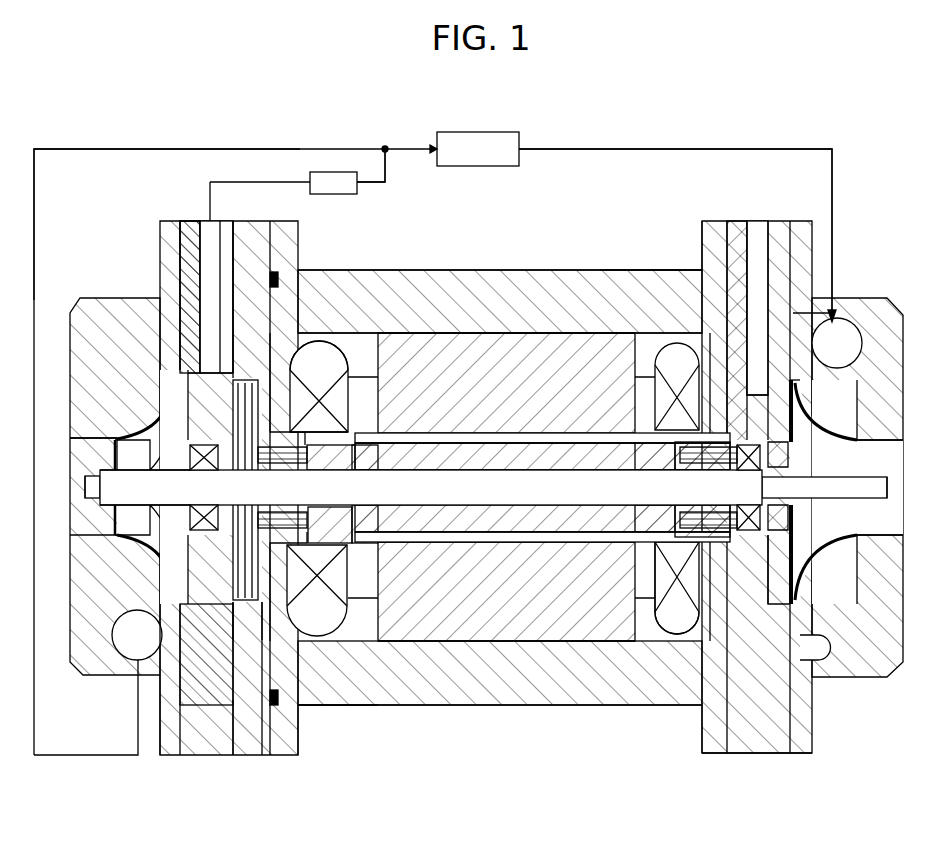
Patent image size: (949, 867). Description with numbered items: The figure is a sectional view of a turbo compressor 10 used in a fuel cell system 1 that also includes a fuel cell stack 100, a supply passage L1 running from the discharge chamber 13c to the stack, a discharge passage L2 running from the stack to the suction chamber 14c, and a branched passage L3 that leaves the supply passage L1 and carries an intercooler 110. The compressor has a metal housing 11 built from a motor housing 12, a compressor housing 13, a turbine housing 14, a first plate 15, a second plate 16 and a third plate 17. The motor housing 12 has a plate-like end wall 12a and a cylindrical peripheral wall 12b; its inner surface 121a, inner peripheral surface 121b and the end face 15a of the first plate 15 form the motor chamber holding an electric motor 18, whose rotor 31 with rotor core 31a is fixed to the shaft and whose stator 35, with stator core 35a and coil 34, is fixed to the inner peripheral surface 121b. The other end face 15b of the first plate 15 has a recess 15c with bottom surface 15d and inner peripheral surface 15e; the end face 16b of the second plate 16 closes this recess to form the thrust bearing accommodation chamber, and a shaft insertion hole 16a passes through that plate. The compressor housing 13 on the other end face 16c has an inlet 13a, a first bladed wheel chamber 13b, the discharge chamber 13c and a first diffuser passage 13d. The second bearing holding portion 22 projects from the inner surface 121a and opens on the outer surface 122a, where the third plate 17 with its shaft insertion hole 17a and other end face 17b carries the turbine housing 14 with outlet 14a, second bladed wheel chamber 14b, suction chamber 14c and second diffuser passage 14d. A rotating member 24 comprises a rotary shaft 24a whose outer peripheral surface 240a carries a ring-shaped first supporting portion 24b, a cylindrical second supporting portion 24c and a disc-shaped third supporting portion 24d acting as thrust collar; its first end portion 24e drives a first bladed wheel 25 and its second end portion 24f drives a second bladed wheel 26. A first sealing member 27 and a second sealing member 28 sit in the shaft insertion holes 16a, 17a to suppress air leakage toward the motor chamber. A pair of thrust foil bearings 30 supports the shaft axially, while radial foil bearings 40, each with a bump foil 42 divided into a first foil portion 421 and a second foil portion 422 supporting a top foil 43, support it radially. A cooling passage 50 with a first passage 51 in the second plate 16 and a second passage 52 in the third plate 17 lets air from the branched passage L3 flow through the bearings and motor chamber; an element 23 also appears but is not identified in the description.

The fuel cell system 1 is at (852, 182).
The turbo compressor 10 is at (590, 258).
The housing 11 is at (510, 262).
The motor housing 12 is at (450, 270).
The end wall 12a is at (705, 221).
The peripheral wall 12b is at (630, 270).
The compressor housing 13 is at (110, 298).
The inlet 13a is at (80, 442).
The first bladed wheel chamber 13b is at (146, 445).
The discharge chamber 13c is at (137, 635).
The first diffuser passage 13d is at (140, 560).
The turbine housing 14 is at (865, 298).
The outlet 14a is at (903, 445).
The second bladed wheel chamber 14b is at (790, 445).
The suction chamber 14c is at (837, 343).
The second diffuser passage 14d is at (803, 383).
The first plate 15 is at (245, 240).
The end face 15a is at (298, 755).
The other end face 15b is at (235, 755).
The recess 15c is at (232, 345).
The bottom surface 15d is at (262, 605).
The inner peripheral surface 15e is at (235, 605).
The second plate 16 is at (172, 221).
The shaft insertion hole 16a is at (238, 555).
The end face 16b is at (262, 755).
The other end face 16c is at (175, 755).
The third plate 17 is at (783, 225).
The shaft insertion hole 17a is at (762, 548).
The other end face 17b is at (812, 745).
The electric motor 18 is at (558, 326).
The second bearing holding portion 22 is at (600, 585).
The sleeve 23 is at (358, 520).
The rotating member 24 is at (455, 506).
The rotary shaft 24a is at (505, 542).
The first supporting portion 24b is at (331, 457).
The second supporting portion 24c is at (685, 462).
The third supporting portion 24d is at (192, 487).
The first end portion 24e is at (85, 488).
The second end portion 24f is at (887, 488).
The outer peripheral surface 240a is at (490, 440).
The first bladed wheel 25 is at (165, 510).
The second bladed wheel 26 is at (810, 515).
The first sealing member 27 is at (204, 470).
The second sealing member 28 is at (748, 470).
The thrust foil bearing 30 is at (272, 575).
The rotor 31 is at (540, 542).
The rotor core 31a is at (565, 545).
The coil 34 is at (338, 705).
The stator 35 is at (530, 690).
The stator core 35a is at (470, 680).
The radial foil bearing 40 is at (378, 575).
The bump foil 42 is at (322, 405).
The top foil 43 is at (380, 545).
The cooling passage 50 is at (205, 221).
The first passage 51 is at (190, 240).
The second passage 52 is at (757, 225).
The fuel cell stack 100 is at (519, 135).
The intercooler 110 is at (335, 194).
The inner surface 121a is at (700, 645).
The inner peripheral surface 121b is at (680, 645).
The outer surface 122a is at (750, 753).
The first foil portion 421 is at (320, 400).
The second foil portion 422 is at (320, 395).
The supply passage L1 is at (240, 149).
The discharge passage L2 is at (608, 149).
The branched passage L3 is at (385, 190).